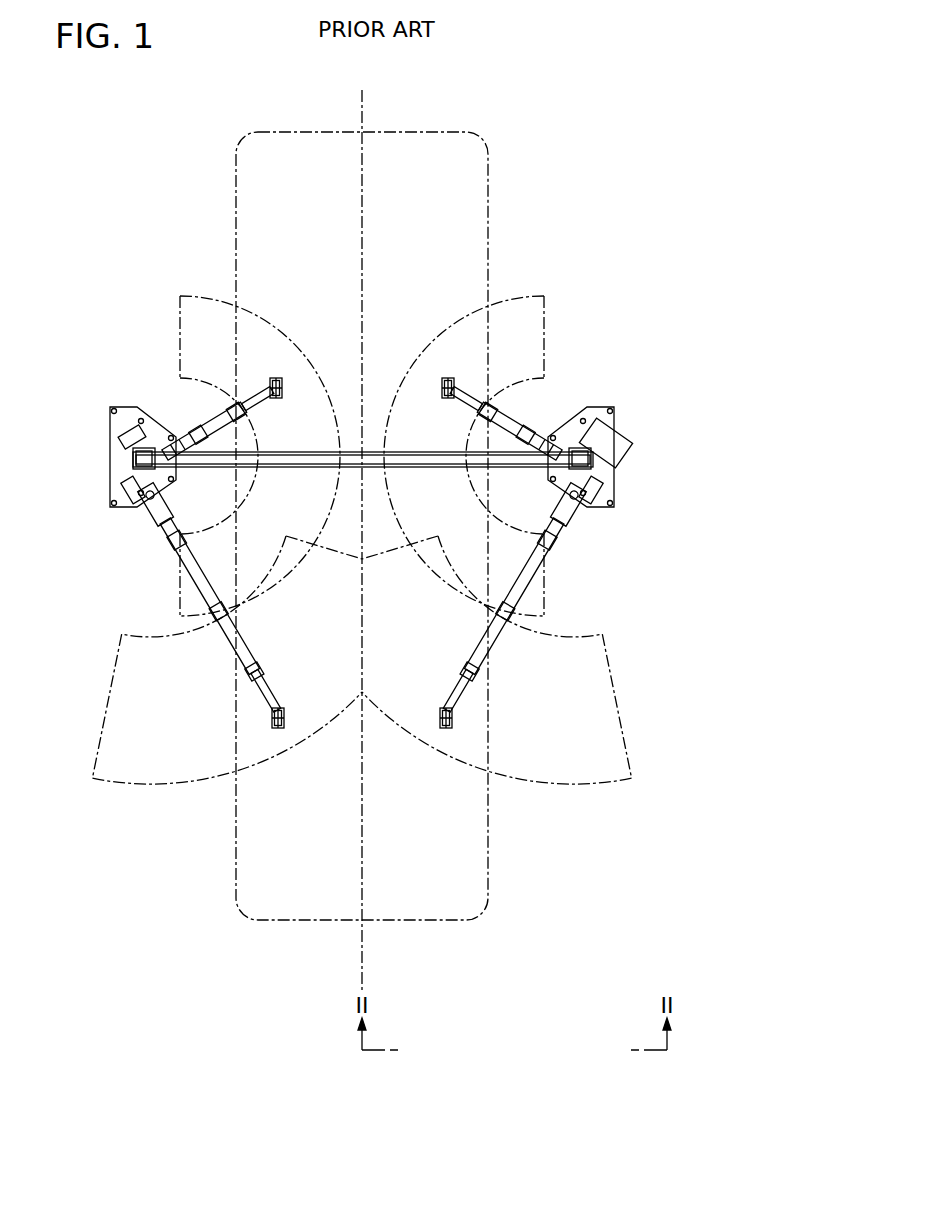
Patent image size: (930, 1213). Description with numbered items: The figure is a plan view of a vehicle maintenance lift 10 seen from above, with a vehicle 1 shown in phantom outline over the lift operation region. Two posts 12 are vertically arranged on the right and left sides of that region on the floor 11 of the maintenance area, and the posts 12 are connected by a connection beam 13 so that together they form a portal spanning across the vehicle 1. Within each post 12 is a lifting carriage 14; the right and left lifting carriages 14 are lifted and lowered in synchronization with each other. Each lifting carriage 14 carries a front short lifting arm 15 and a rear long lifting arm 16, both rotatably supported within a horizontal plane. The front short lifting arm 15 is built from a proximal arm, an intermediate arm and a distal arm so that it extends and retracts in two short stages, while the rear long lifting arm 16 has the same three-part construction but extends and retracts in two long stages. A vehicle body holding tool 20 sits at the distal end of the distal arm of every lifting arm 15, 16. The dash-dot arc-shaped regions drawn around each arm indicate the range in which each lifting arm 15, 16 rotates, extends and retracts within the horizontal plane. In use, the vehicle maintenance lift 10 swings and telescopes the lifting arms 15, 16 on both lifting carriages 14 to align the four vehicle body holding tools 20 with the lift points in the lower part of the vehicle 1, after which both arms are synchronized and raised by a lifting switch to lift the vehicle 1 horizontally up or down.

The vehicle 1 is at (230, 178).
The vehicle maintenance lift 10 is at (97, 362).
The floor 11 is at (125, 234).
The post 12 is at (118, 464).
The connection beam 13 is at (407, 451).
The lifting carriage 14 is at (156, 495).
The front short lifting arm 15 is at (191, 410).
The rear long lifting arm 16 is at (163, 564).
The vehicle body holding tool 20 is at (276, 377).